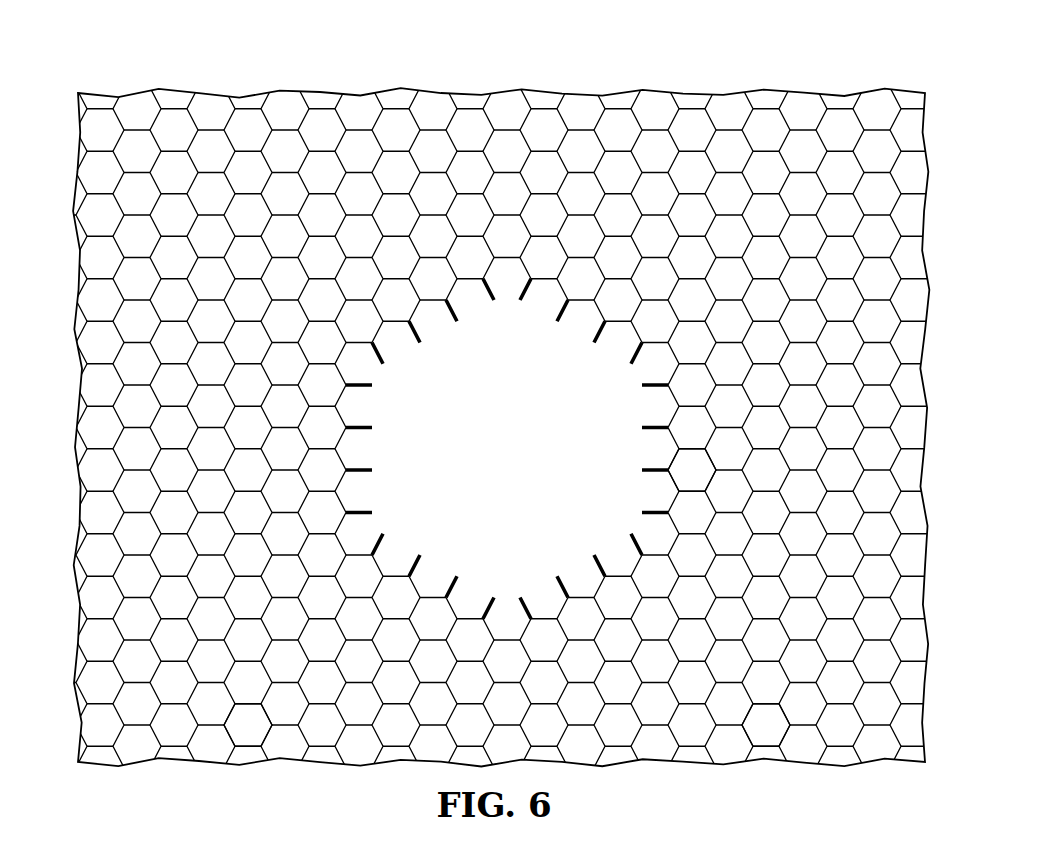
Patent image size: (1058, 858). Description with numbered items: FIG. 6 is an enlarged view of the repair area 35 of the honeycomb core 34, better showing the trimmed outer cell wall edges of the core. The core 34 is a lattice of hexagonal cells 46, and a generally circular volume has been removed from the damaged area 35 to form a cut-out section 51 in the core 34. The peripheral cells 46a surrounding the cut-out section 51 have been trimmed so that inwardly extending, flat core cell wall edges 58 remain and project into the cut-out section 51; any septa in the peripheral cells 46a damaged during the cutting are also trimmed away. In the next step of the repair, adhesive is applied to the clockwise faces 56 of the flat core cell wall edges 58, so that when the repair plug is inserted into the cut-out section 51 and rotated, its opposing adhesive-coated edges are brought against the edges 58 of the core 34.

The honeycomb core 34 is at (696, 93).
The repair area 35 is at (680, 463).
The cell 46 is at (248, 737).
The peripheral cell 46a is at (505, 293).
The cut-out section 51 is at (493, 441).
The clockwise face 56 is at (454, 322).
The flat core cell wall edge 58 is at (359, 426).